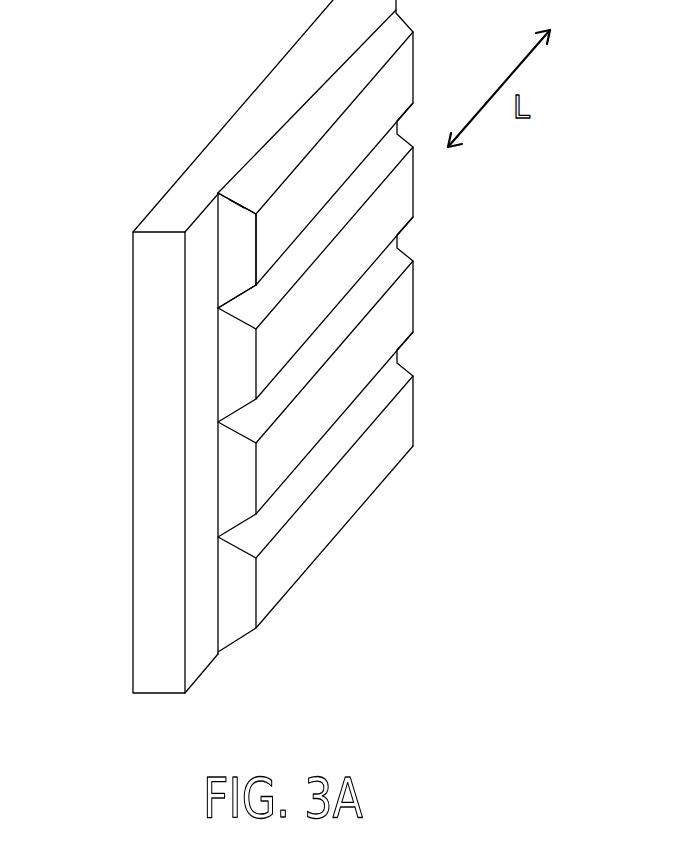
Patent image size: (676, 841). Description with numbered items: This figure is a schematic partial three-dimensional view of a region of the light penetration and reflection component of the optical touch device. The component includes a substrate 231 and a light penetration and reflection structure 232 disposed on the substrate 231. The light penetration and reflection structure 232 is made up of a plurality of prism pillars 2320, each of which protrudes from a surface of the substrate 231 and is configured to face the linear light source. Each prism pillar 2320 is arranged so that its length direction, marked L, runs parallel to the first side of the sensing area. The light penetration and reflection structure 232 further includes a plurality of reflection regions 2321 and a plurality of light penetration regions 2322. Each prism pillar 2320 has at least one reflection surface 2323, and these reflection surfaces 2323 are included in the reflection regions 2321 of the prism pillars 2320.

The substrate 231 is at (140, 590).
The light penetration and reflection structure 232 is at (241, 657).
The prism pillar 2320 is at (246, 622).
The reflection region 2321 is at (256, 214).
The light penetration region 2322 is at (112, 214).
The reflection surface 2323 is at (238, 217).